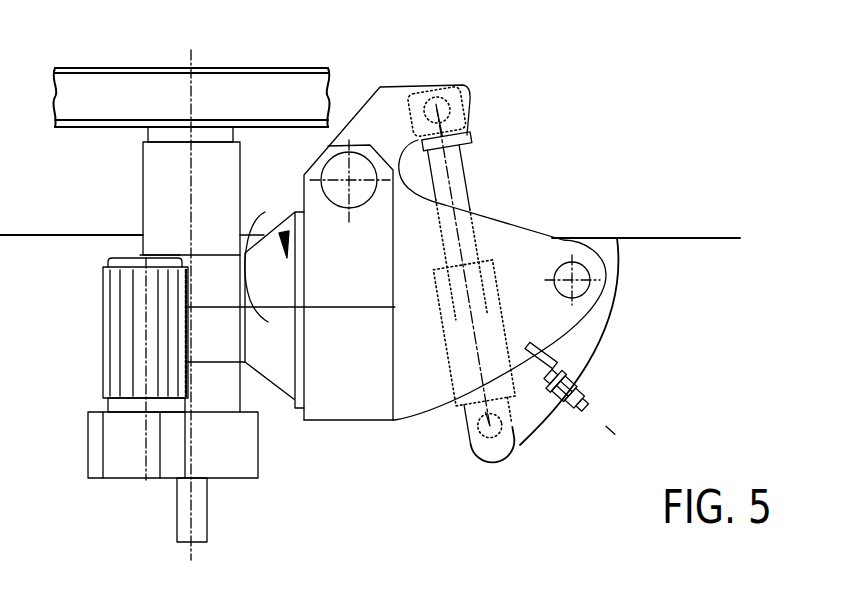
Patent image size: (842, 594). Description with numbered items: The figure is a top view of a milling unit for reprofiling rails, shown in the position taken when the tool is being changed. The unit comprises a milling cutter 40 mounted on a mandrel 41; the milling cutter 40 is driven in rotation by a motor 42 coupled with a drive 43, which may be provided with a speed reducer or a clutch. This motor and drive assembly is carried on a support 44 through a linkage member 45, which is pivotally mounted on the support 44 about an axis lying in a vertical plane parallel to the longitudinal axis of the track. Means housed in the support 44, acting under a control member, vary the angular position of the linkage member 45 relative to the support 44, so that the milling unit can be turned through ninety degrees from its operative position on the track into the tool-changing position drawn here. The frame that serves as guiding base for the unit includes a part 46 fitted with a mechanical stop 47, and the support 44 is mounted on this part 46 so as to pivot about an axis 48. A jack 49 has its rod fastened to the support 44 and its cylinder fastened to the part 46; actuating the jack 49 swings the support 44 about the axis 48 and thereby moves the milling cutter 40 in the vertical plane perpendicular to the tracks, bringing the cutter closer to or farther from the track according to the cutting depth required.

The milling cutter 40 is at (257, 97).
The mandrel 41 is at (165, 180).
The motor 42 is at (130, 342).
The drive 43 is at (224, 448).
The support 44 is at (426, 365).
The linkage member 45 is at (272, 358).
The part 46 is at (582, 343).
The mechanical stop 47 is at (563, 433).
The axis 48 is at (580, 265).
The jack 49 is at (456, 168).